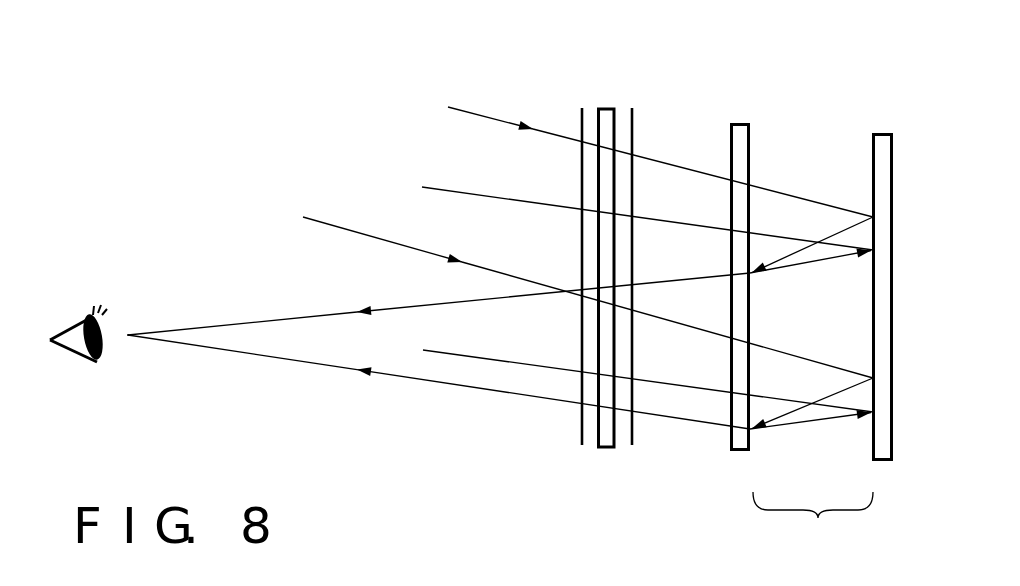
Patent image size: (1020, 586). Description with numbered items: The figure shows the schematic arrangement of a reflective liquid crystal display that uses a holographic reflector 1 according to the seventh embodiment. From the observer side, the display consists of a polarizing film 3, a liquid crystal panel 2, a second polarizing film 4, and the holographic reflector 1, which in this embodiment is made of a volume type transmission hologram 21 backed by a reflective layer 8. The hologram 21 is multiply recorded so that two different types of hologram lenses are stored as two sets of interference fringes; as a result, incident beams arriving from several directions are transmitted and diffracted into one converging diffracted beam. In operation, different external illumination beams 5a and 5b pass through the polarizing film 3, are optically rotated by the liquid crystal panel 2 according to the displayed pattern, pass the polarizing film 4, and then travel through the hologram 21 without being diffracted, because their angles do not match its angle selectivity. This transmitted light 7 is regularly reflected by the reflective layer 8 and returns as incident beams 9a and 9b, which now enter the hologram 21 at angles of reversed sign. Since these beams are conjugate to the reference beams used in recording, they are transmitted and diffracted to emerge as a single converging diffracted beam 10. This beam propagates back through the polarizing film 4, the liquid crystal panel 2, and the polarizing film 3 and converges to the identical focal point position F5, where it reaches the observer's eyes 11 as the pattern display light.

The holographic reflector 1 is at (813, 522).
The liquid crystal panel 2 is at (600, 107).
The polarizing film 3 is at (577, 448).
The polarizing film 4 is at (632, 448).
The illumination beam 5a is at (493, 118).
The illumination beam 5b is at (480, 195).
The transmitted light 7 is at (785, 192).
The reflective layer 8 is at (876, 132).
The incident beam 9a is at (807, 247).
The incident beam 9b is at (780, 270).
The diffracted beam 10 is at (298, 317).
The observer's eyes 11 is at (78, 367).
The volume type transmission hologram 21 is at (737, 123).
The focal point position F5 is at (128, 333).